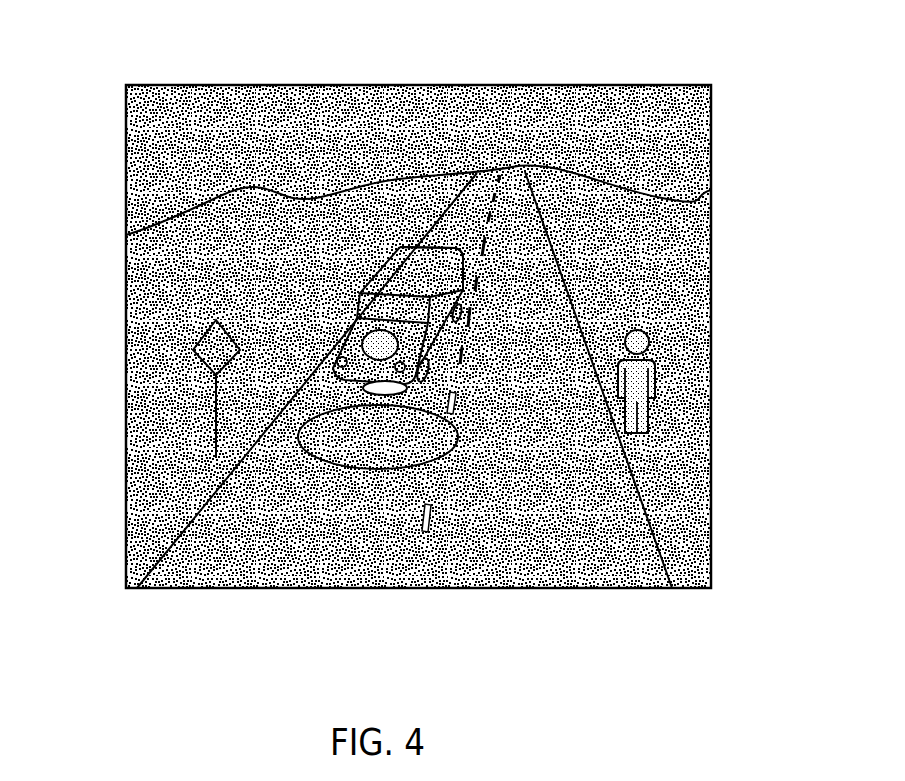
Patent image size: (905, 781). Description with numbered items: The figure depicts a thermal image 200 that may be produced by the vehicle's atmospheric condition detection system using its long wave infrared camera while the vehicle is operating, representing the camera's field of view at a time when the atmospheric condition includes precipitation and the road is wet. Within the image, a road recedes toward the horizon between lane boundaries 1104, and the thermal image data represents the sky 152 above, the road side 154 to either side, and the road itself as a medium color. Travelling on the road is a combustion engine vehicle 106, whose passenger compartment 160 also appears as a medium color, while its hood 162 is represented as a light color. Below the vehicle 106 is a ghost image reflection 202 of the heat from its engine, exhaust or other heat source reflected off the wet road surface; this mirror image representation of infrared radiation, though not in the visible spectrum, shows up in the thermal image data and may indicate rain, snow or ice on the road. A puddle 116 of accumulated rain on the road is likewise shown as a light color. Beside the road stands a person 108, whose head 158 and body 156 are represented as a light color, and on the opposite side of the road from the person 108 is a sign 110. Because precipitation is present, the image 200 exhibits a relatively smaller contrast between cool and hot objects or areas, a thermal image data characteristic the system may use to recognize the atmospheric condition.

The thermal image 200 is at (636, 72).
The combustion engine vehicle 106 is at (382, 259).
The sky 152 is at (683, 167).
The road side 154 is at (675, 252).
The road edge 1104 is at (648, 552).
The passenger compartment 160 is at (392, 297).
The hood 162 is at (382, 343).
The ghost image reflection 202 is at (387, 386).
The puddle 116 is at (320, 427).
The sign 110 is at (196, 326).
The body 156 is at (647, 365).
The head 158 is at (643, 338).
The person 108 is at (660, 408).